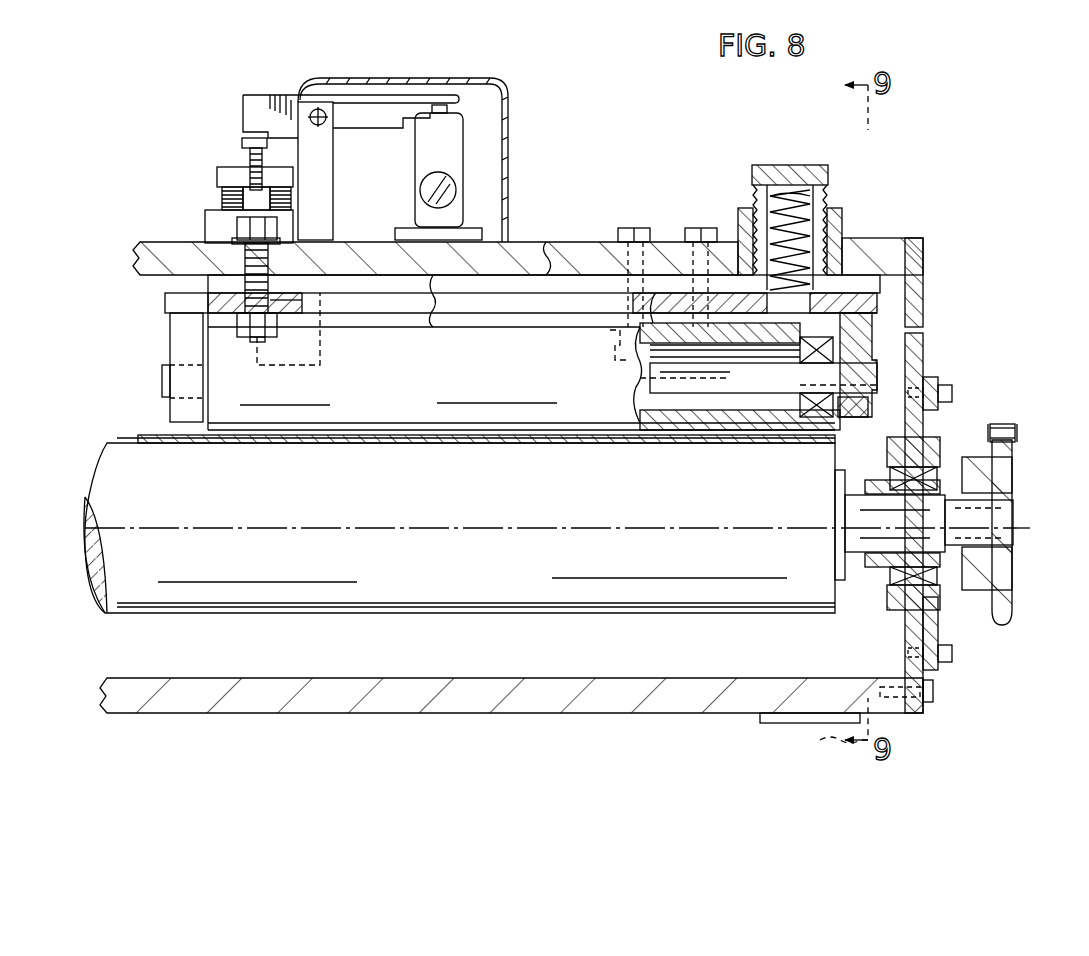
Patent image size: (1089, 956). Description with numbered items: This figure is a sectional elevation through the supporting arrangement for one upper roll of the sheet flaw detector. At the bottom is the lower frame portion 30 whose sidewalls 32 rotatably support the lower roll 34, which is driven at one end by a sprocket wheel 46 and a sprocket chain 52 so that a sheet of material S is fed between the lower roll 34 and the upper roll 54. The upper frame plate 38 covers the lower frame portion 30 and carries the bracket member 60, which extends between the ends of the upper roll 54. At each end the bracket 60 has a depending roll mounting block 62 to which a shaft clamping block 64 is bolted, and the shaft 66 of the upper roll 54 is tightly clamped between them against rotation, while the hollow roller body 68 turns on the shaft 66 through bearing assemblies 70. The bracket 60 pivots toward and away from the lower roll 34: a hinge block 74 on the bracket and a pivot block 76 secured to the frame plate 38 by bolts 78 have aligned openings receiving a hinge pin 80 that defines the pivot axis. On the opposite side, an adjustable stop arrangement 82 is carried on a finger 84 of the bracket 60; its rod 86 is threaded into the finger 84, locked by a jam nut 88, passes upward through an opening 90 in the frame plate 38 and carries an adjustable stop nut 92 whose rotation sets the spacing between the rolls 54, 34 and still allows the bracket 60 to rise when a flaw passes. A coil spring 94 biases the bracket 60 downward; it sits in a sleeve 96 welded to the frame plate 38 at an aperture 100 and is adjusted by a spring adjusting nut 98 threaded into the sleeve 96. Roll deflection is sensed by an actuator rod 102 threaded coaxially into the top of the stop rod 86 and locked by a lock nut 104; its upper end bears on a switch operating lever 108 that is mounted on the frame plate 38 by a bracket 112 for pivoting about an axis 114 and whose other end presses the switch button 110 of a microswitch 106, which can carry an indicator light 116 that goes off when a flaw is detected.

The lower frame portion 30 is at (926, 690).
The sidewalls 32 is at (916, 374).
The lower roll 34 is at (552, 606).
The upper frame plate 38 is at (534, 245).
The sprocket wheel 46 is at (1002, 568).
The sprocket chain 52 is at (1016, 433).
The upper roll 54 is at (492, 420).
The sheet of material S is at (356, 442).
The bracket member 60 is at (573, 275).
The roll mounting block 62 is at (178, 344).
The shaft clamping block 64 is at (180, 410).
The shaft 66 is at (878, 376).
The hollow roller body 68 is at (760, 428).
The bearing assemblies 70 is at (816, 416).
The hinge block 74 is at (298, 360).
The pivot block 76 is at (434, 282).
The bolts 78 is at (700, 228).
The hinge pin 80 is at (610, 336).
The adjustable stop arrangement 82 is at (226, 223).
The finger 84 is at (286, 308).
The rod 86 is at (246, 286).
The jam nut 88 is at (244, 328).
The opening 90 is at (244, 258).
The adjustable stop nut 92 is at (270, 228).
The coil spring 94 is at (798, 190).
The sleeve 96 is at (838, 218).
The spring adjusting nut 98 is at (829, 176).
The aperture 100 is at (844, 238).
The actuator rod 102 is at (250, 156).
The lock nut 104 is at (228, 196).
The microswitch 106 is at (456, 150).
The switch operating lever 108 is at (374, 100).
The switch button 110 is at (440, 105).
The bracket 112 is at (332, 156).
The axis 114 is at (320, 108).
The indicator light 116 is at (420, 184).